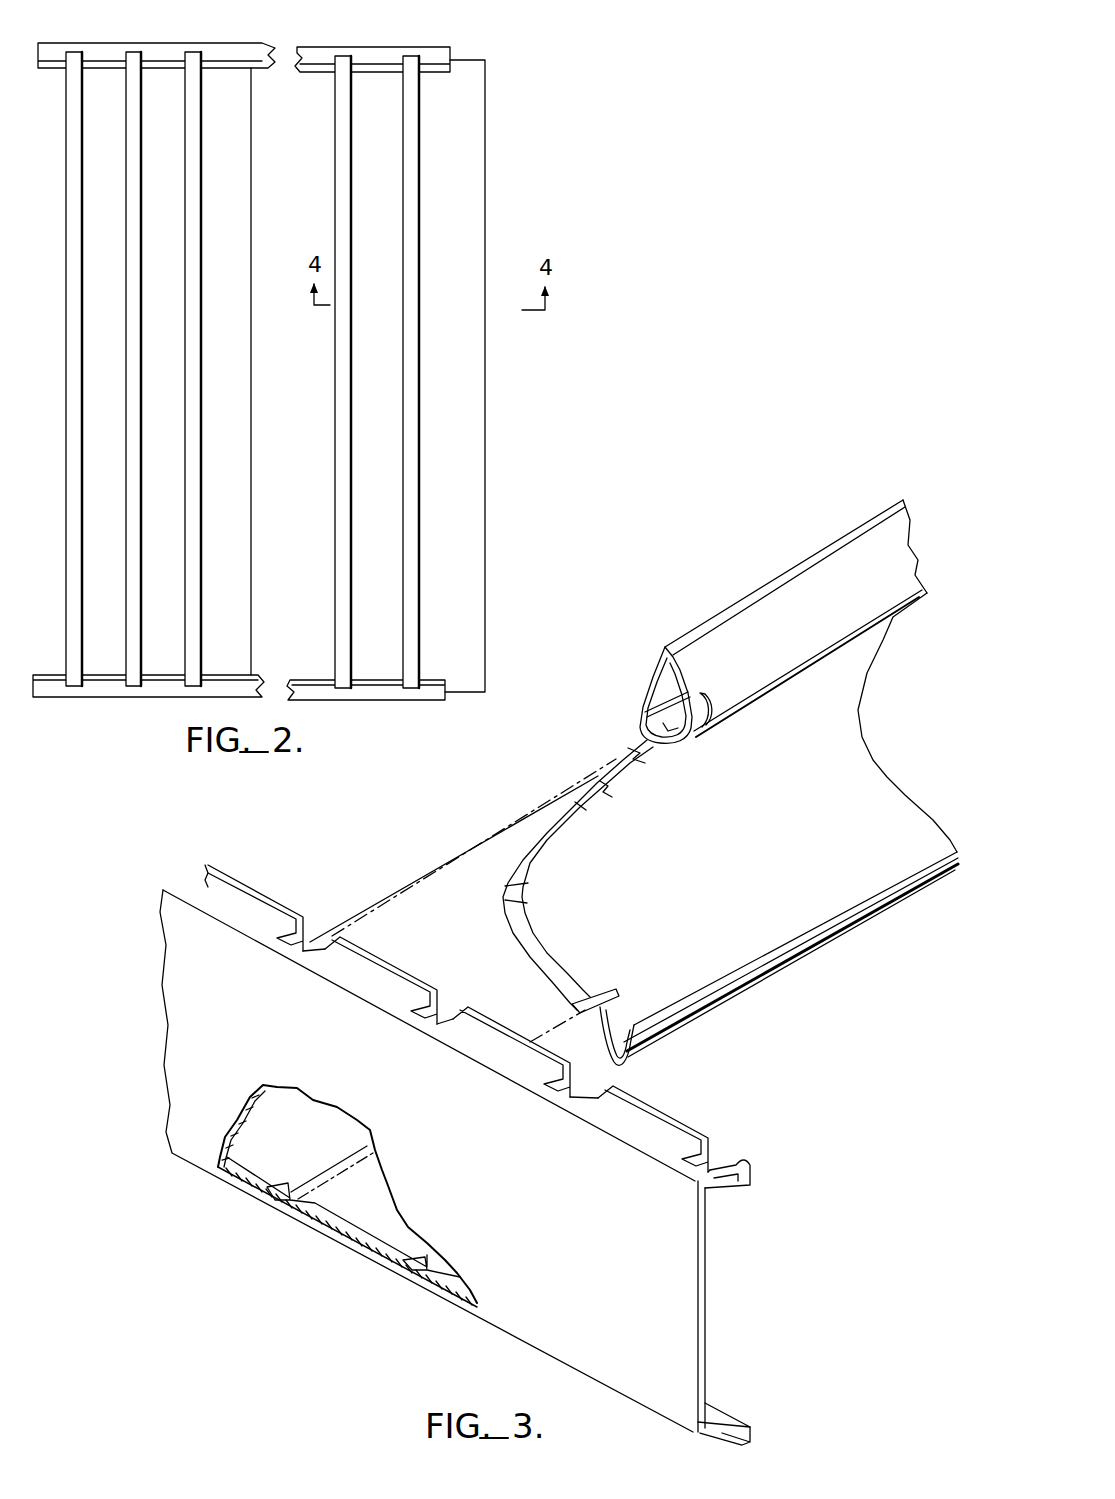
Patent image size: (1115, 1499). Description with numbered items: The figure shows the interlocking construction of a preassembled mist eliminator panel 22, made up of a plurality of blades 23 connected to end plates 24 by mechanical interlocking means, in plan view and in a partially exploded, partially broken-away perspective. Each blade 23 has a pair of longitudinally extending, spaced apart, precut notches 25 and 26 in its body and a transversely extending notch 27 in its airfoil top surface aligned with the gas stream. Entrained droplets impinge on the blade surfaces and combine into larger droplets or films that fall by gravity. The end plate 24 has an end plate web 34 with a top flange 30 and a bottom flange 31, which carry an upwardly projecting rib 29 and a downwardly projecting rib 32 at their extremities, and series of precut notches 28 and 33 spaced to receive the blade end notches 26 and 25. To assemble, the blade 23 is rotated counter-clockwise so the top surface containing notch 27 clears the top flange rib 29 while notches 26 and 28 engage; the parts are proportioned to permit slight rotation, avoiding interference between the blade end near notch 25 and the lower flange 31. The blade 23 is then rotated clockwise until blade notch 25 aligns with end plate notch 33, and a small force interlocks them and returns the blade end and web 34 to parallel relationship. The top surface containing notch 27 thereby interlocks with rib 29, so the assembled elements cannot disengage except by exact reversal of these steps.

In FIG. 2, the mist eliminator panel 22 is at (318, 88).
In FIG. 2, the blade 23 is at (388, 88).
In FIG. 3, the blade 23 is at (820, 915).
In FIG. 2, the end plate 24 is at (227, 62).
In FIG. 3, the end plate 24 is at (526, 1298).
In FIG. 3, the precut notch 25 is at (616, 1005).
In FIG. 3, the precut notch 26 is at (625, 743).
In FIG. 3, the transversely extending notch 27 is at (720, 703).
In FIG. 3, the precut notch 28 is at (312, 934).
In FIG. 3, the top flange rib 29 is at (690, 1135).
In FIG. 3, the top flange 30 is at (730, 1194).
In FIG. 3, the bottom flange 31 is at (724, 1415).
In FIG. 3, the rib 32 is at (760, 1438).
In FIG. 3, the end plate notch 33 is at (282, 1214).
In FIG. 3, the end plate web 34 is at (676, 1291).